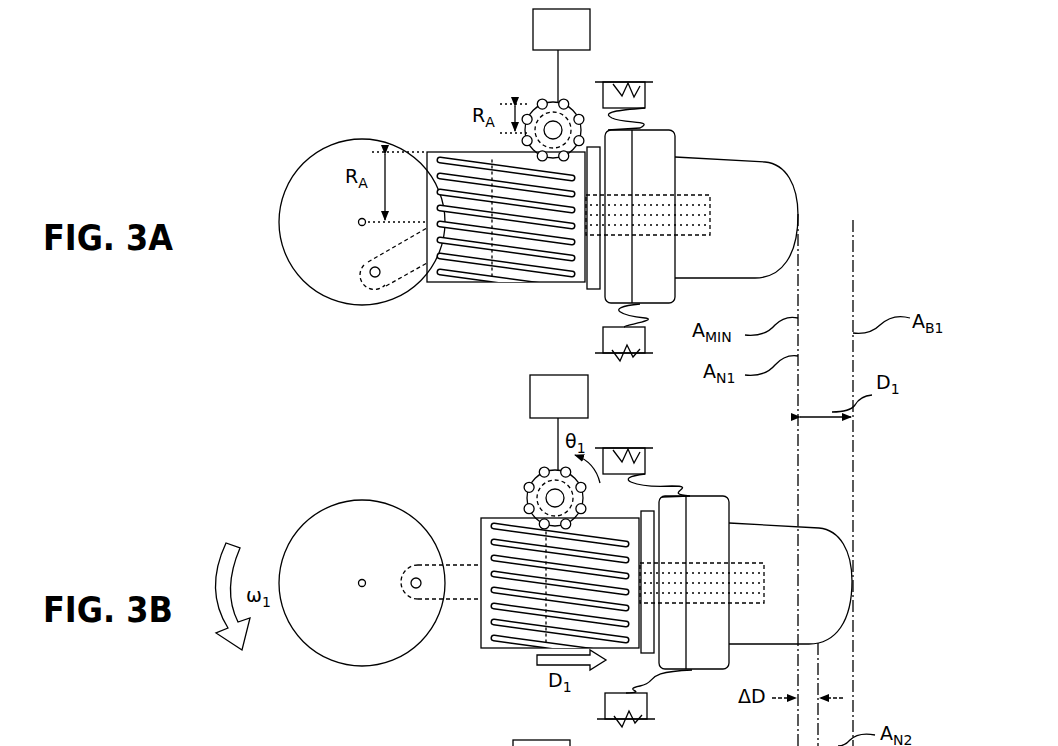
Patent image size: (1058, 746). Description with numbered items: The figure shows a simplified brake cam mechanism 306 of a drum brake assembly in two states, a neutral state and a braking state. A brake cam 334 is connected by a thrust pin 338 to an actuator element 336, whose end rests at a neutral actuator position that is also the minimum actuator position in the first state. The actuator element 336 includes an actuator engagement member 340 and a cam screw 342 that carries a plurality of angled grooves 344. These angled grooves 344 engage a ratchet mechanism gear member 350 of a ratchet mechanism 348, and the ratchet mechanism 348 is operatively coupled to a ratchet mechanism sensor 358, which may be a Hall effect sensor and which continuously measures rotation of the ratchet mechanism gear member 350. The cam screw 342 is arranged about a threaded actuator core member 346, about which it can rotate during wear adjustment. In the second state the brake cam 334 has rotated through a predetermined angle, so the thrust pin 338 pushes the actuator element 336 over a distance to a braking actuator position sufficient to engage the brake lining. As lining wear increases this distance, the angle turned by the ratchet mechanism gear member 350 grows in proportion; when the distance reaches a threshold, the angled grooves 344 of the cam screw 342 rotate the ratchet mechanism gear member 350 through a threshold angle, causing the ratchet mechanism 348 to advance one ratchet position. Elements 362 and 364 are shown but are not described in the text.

In FIG. 3A, the brake cam mechanism 306 is at (278, 82).
In FIG. 3B, the brake cam mechanism 306 is at (278, 480).
In FIG. 3A, the brake cam 334 is at (312, 257).
In FIG. 3B, the brake cam 334 is at (326, 633).
In FIG. 3A, the actuator element 336 is at (695, 178).
In FIG. 3B, the actuator element 336 is at (768, 540).
In FIG. 3A, the thrust pin 338 is at (400, 292).
In FIG. 3B, the thrust pin 338 is at (448, 598).
In FIG. 3A, the actuator engagement member 340 is at (762, 197).
In FIG. 3B, the actuator engagement member 340 is at (832, 593).
In FIG. 3A, the cam screw 342 is at (497, 283).
In FIG. 3B, the cam screw 342 is at (537, 650).
In FIG. 3A, the angled grooves 344 is at (548, 283).
In FIG. 3B, the angled grooves 344 is at (612, 630).
In FIG. 3A, the threaded actuator core member 346 is at (698, 236).
In FIG. 3B, the threaded actuator core member 346 is at (735, 604).
In FIG. 3A, the ratchet mechanism 348 is at (537, 117).
In FIG. 3B, the ratchet mechanism 348 is at (540, 488).
In FIG. 3A, the ratchet mechanism gear member 350 is at (555, 128).
In FIG. 3B, the ratchet mechanism gear member 350 is at (528, 506).
In FIG. 3A, the ratchet mechanism sensor 358 is at (545, 41).
In FIG. 3B, the ratchet mechanism sensor 358 is at (543, 407).
In FIG. 3A, the stop 362 is at (632, 97).
In FIG. 3B, the stop 362 is at (632, 463).
In FIG. 3A, the biasing spring 364 is at (648, 114).
In FIG. 3B, the biasing spring 364 is at (660, 478).